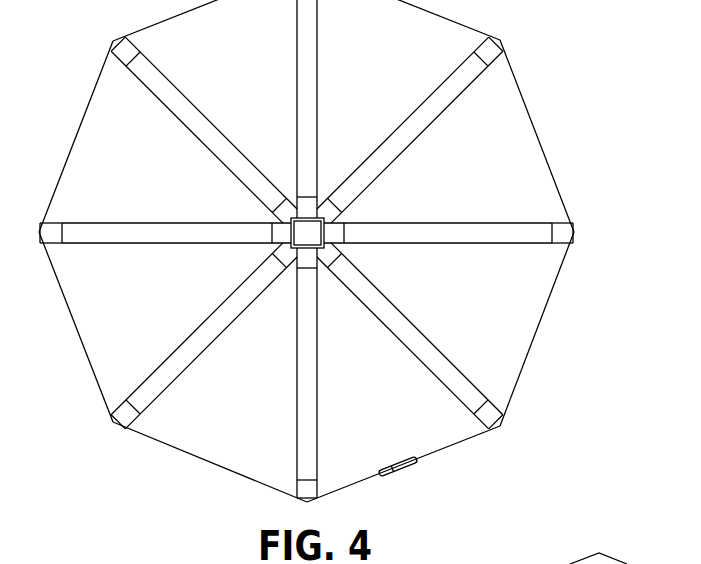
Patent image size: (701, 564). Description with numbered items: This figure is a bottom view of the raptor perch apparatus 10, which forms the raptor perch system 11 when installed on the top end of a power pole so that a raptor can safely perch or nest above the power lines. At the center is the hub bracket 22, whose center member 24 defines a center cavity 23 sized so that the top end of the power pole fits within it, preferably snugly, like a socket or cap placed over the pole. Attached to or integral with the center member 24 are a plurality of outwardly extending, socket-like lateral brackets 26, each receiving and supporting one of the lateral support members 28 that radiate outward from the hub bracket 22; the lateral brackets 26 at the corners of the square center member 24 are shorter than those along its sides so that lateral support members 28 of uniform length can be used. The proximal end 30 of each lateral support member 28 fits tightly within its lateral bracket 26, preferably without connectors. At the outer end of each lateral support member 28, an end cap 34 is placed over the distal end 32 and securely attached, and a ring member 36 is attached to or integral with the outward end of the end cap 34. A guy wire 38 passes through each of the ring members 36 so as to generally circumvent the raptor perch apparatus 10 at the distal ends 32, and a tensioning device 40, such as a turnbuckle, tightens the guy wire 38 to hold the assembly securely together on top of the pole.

The raptor perch apparatus 10 is at (361, 263).
The raptor perch system 11 is at (361, 251).
The hub bracket 22 is at (246, 262).
The center cavity 23 is at (303, 240).
The center member 24 is at (323, 234).
The lateral bracket 26 is at (283, 220).
The lateral support member 28 is at (447, 236).
The proximal end 30 is at (366, 209).
The distal end 32 is at (537, 208).
The end cap 34 is at (53, 230).
The ring member 36 is at (576, 233).
The guy wire 38 is at (548, 307).
The tensioning device 40 is at (405, 473).